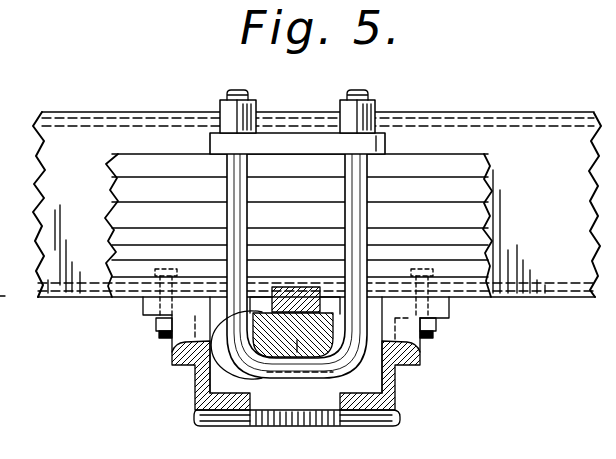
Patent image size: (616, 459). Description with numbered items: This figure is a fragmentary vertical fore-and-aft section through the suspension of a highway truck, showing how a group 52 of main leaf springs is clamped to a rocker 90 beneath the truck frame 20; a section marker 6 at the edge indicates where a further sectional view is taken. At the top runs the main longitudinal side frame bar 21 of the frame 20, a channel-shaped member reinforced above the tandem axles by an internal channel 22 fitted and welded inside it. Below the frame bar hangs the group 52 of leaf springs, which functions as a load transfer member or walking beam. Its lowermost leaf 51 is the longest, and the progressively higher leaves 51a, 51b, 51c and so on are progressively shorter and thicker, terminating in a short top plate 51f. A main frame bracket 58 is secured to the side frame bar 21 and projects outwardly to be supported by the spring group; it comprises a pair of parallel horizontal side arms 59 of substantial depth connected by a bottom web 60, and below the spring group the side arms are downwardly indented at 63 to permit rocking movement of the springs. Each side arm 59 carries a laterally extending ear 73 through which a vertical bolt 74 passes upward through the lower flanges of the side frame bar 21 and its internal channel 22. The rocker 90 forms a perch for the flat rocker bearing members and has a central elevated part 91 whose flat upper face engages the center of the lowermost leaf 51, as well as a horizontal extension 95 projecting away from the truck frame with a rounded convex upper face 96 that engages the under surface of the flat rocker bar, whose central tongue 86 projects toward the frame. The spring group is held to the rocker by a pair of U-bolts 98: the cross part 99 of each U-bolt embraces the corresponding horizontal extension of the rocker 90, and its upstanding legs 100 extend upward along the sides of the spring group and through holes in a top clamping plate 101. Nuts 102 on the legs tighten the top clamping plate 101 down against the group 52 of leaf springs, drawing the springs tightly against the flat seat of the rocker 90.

The section line indicator 6 is at (8, 284).
The frame 20 is at (527, 112).
The main longitudinal side frame bar 21 is at (89, 112).
The internal channel 22 is at (147, 118).
The lowermost leaf 51 is at (302, 230).
The spring leaf 51a is at (114, 269).
The spring leaf 51b is at (114, 251).
The spring leaf 51c is at (114, 233).
The top plate 51f is at (118, 160).
The group of main leaf springs 52 is at (490, 158).
The main frame bracket 58 is at (373, 427).
The side arm 59 is at (143, 305).
The bottom web 60 is at (297, 372).
The downward indentation 63 is at (176, 348).
The laterally extending ear 73 is at (446, 308).
The vertical bolt 74 is at (158, 334).
The central tongue 86 is at (293, 297).
The rocker 90 is at (272, 357).
The central elevated part 91 is at (328, 300).
The horizontal extension 95 is at (297, 340).
The rounded convex upper face 96 is at (236, 345).
The U-bolt 98 is at (238, 94).
The cross part 99 is at (304, 372).
The upstanding leg 100 is at (350, 188).
The top clamping plate 101 is at (297, 143).
The nut 102 is at (257, 109).